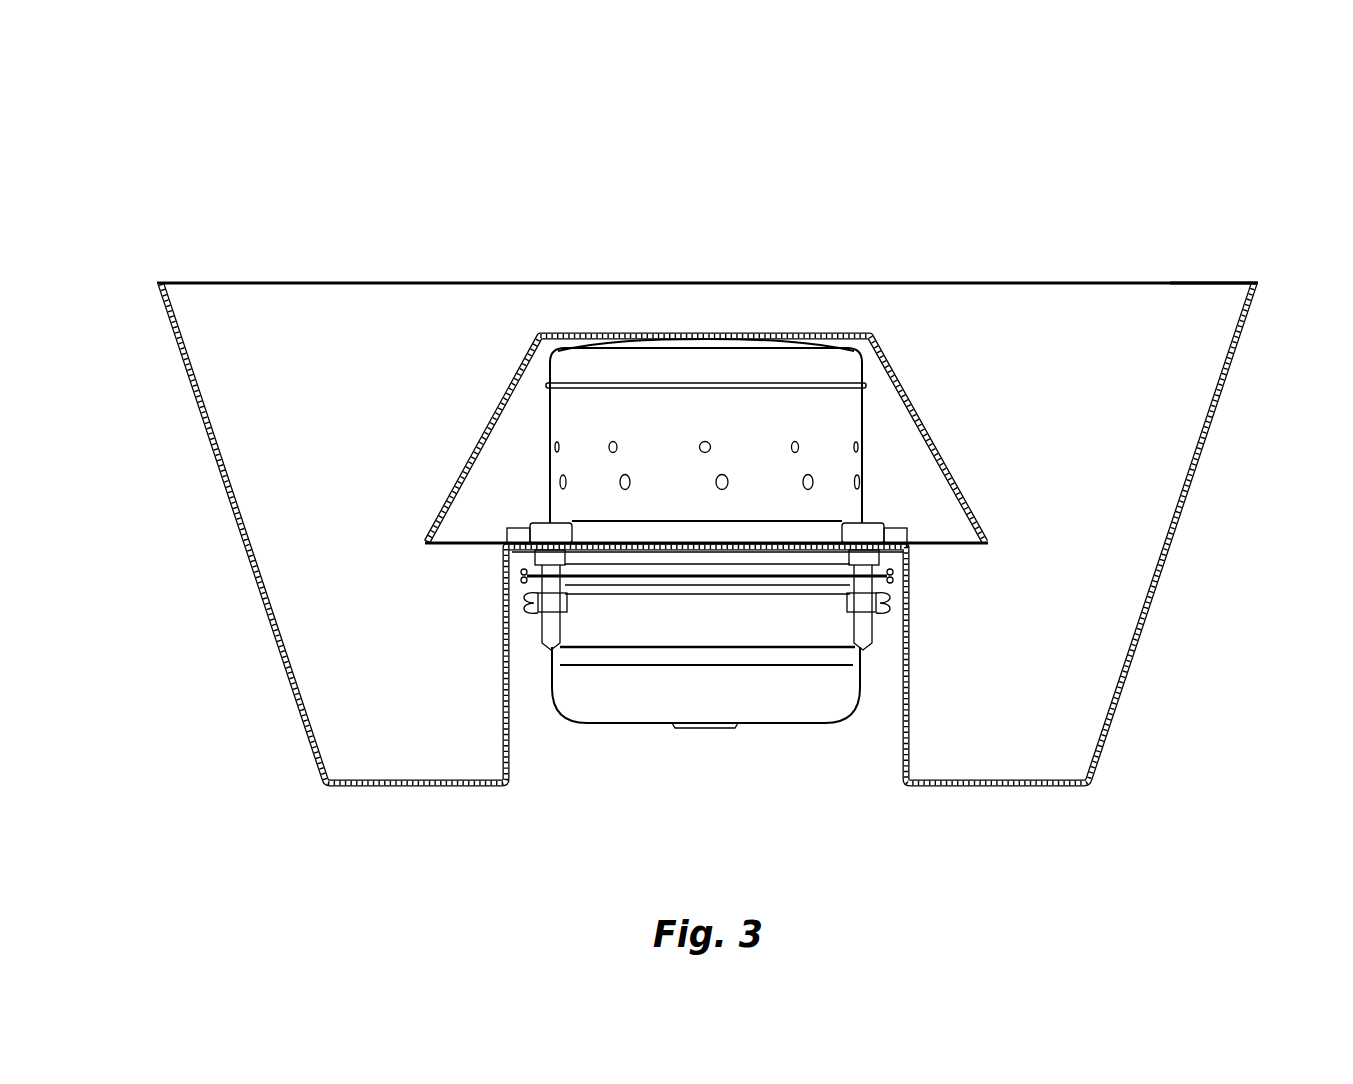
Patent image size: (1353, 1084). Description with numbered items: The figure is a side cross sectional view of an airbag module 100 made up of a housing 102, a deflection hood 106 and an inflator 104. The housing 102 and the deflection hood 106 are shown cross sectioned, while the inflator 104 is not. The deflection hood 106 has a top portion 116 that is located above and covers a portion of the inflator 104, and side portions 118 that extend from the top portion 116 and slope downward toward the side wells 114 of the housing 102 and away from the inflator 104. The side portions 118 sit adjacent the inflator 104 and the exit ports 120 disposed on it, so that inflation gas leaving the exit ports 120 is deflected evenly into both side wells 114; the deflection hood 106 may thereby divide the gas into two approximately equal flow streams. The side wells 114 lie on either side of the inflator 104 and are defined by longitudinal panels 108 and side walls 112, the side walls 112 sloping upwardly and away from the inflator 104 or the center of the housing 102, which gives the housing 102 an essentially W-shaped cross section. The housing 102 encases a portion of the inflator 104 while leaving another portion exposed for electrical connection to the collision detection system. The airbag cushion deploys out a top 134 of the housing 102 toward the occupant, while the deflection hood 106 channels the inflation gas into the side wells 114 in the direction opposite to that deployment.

The airbag module 100 is at (1056, 192).
The housing 102 is at (1165, 600).
The inflator 104 is at (758, 690).
The deflection hood 106 is at (896, 358).
The longitudinal panels 108 is at (1191, 282).
The side walls 112 is at (205, 425).
The side wells 114 is at (408, 728).
The top portion 116 is at (580, 330).
The side portions 118 is at (488, 425).
The exit ports 120 is at (560, 481).
The top 134 is at (247, 282).